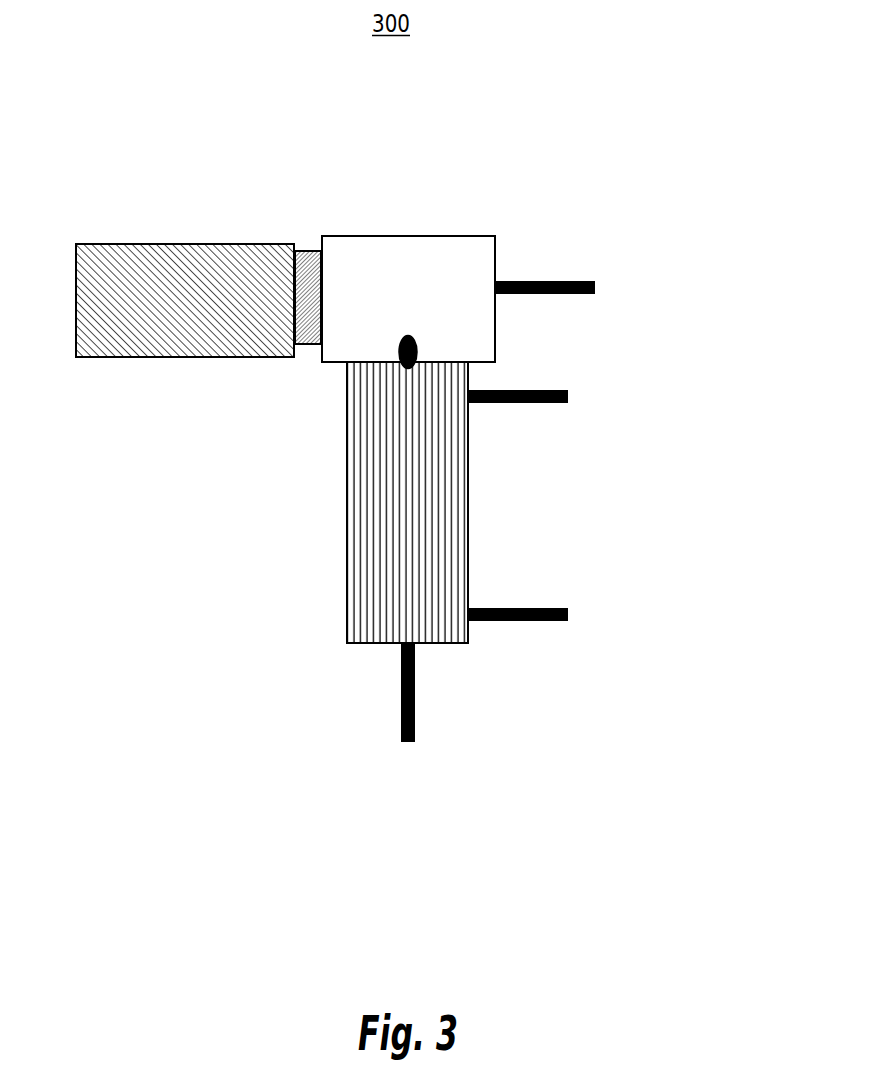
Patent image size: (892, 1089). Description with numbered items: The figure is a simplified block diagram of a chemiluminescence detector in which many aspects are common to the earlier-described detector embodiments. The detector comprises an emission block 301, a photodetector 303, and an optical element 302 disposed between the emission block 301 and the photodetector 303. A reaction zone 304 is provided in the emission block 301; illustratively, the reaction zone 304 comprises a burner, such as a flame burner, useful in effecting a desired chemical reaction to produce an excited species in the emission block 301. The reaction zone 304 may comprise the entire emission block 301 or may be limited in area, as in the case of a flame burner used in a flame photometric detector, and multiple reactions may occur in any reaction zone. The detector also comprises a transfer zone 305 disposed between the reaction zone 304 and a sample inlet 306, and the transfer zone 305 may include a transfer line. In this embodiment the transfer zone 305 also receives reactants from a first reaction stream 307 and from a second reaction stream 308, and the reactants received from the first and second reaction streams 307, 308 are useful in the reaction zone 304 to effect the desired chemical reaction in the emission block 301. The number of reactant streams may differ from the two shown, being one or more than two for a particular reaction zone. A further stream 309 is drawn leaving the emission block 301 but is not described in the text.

The emission block 301 is at (461, 233).
The optical element 302 is at (306, 249).
The photodetector 303 is at (183, 238).
The reaction zone 304 is at (397, 353).
The transfer zone 305 is at (346, 489).
The sample inlet 306 is at (408, 765).
The first reaction stream 307 is at (588, 614).
The second reaction stream 308 is at (588, 396).
The outlet 309 is at (597, 288).